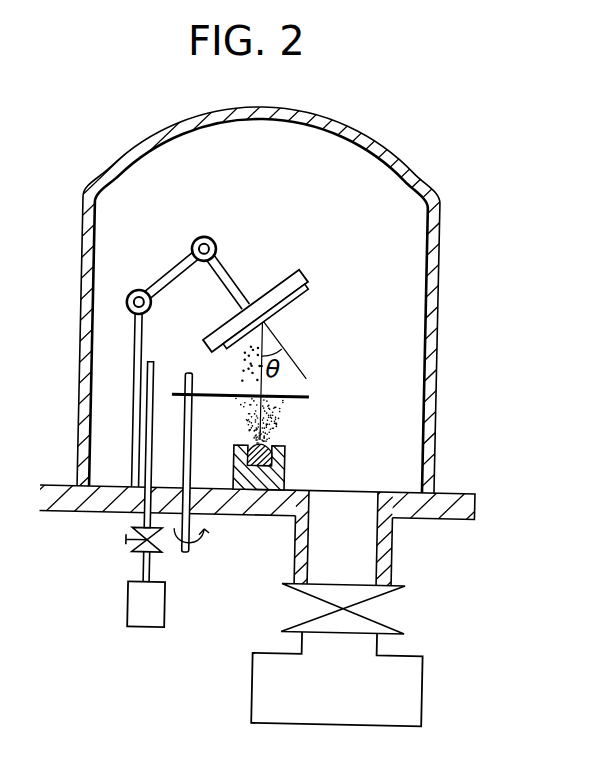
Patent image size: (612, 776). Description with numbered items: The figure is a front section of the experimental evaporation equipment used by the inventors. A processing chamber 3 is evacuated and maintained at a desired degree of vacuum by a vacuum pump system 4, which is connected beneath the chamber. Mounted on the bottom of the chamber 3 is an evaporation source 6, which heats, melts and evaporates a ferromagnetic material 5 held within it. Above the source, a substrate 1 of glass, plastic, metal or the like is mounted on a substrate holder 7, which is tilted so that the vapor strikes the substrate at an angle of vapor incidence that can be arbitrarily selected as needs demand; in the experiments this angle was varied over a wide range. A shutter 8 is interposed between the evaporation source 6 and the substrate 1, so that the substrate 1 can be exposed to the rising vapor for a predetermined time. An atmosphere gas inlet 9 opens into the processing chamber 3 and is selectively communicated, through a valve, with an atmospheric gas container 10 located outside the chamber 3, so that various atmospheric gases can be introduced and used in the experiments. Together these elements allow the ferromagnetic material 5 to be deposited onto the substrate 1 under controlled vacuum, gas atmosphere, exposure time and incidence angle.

The substrate 1 is at (301, 295).
The processing chamber 3 is at (409, 216).
The vacuum pump system 4 is at (411, 679).
The ferromagnetic material 5 is at (261, 443).
The evaporation source 6 is at (285, 462).
The substrate holder 7 is at (278, 290).
The shutter 8 is at (211, 403).
The atmosphere gas inlet 9 is at (151, 369).
The atmospheric gas container 10 is at (143, 616).